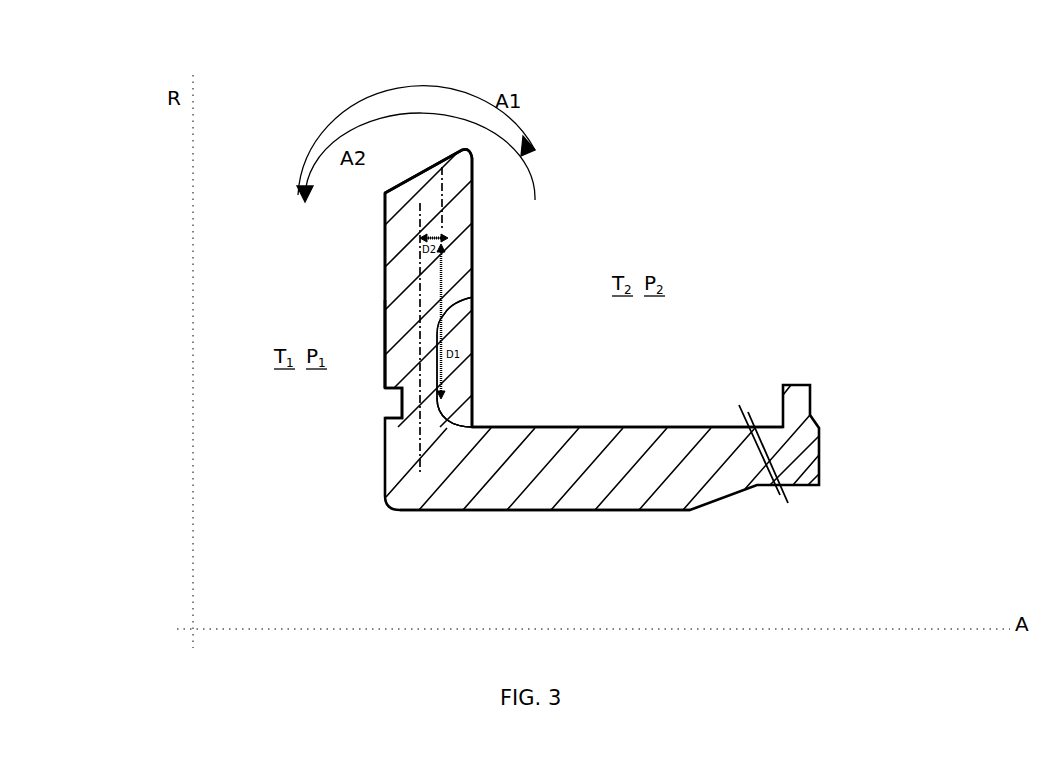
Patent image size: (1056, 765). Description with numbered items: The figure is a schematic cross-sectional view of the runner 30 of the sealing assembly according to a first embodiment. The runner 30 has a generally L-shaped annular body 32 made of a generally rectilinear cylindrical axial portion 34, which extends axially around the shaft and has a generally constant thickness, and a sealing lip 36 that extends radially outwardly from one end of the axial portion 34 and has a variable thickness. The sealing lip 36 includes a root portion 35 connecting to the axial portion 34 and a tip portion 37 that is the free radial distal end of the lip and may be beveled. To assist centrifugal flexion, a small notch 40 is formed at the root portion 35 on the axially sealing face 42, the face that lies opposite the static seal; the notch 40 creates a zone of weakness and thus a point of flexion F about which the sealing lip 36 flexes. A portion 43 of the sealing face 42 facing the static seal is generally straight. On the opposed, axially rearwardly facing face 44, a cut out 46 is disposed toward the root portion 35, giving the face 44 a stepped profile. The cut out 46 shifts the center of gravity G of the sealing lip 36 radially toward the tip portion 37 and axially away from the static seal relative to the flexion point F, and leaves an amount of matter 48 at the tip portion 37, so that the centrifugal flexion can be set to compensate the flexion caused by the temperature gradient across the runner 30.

The runner 30 is at (757, 258).
The annular body 32 is at (598, 440).
The axial portion 34 is at (607, 480).
The root portion 35 is at (423, 428).
The sealing lip 36 is at (422, 258).
The tip portion 37 is at (437, 185).
The notch 40 is at (393, 403).
The sealing face 42 is at (385, 283).
The portion of the sealing face 43 is at (385, 322).
The opposed face 44 is at (473, 275).
The cut out 46 is at (452, 362).
The amount of matter 48 is at (453, 215).
The center of gravity G is at (438, 236).
The flexion point F is at (418, 403).